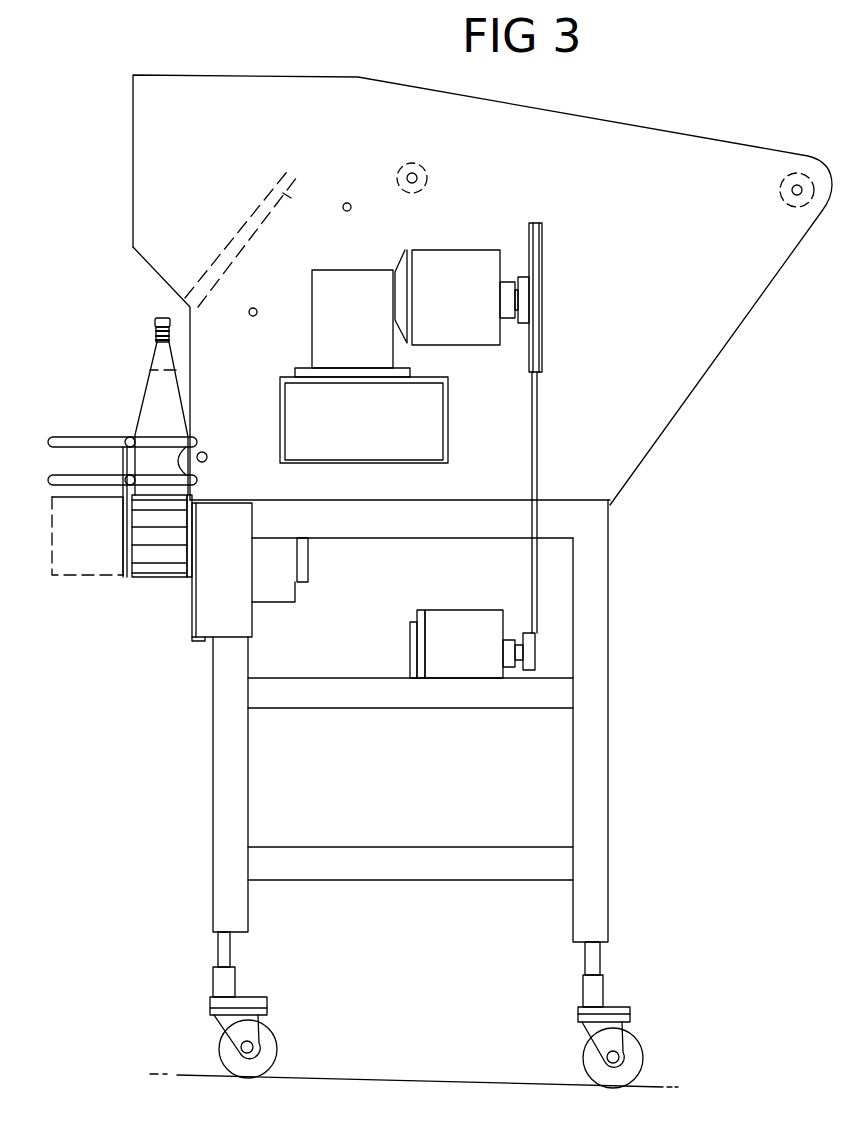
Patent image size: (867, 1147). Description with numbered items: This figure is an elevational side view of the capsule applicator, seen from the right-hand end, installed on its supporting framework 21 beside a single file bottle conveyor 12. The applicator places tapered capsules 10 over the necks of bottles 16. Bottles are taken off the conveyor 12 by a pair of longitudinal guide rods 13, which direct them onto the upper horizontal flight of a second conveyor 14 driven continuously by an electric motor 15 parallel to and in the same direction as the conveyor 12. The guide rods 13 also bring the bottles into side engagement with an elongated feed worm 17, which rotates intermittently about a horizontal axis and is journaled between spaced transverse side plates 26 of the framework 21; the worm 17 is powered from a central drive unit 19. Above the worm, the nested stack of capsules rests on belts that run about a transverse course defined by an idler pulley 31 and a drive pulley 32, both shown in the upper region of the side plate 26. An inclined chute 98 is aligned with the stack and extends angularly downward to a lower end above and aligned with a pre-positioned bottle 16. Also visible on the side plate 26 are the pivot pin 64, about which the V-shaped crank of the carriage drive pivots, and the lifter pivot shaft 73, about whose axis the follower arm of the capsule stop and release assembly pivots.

The capsule 10 is at (155, 345).
The bottle conveyor 12 is at (100, 505).
The guide rods 13 is at (145, 440).
The second conveyor 14 is at (155, 572).
The electric motor 15 is at (290, 586).
The bottle 16 is at (150, 397).
The feed worm 17 is at (206, 454).
The central drive unit 19 is at (475, 600).
The supporting framework 21 is at (625, 604).
The side plate 26 is at (668, 425).
The idler pulley 31 is at (780, 188).
The drive pulley 32 is at (428, 178).
The pivot pin 64 is at (253, 316).
The lifter pivot shaft 73 is at (347, 211).
The chute 98 is at (250, 256).